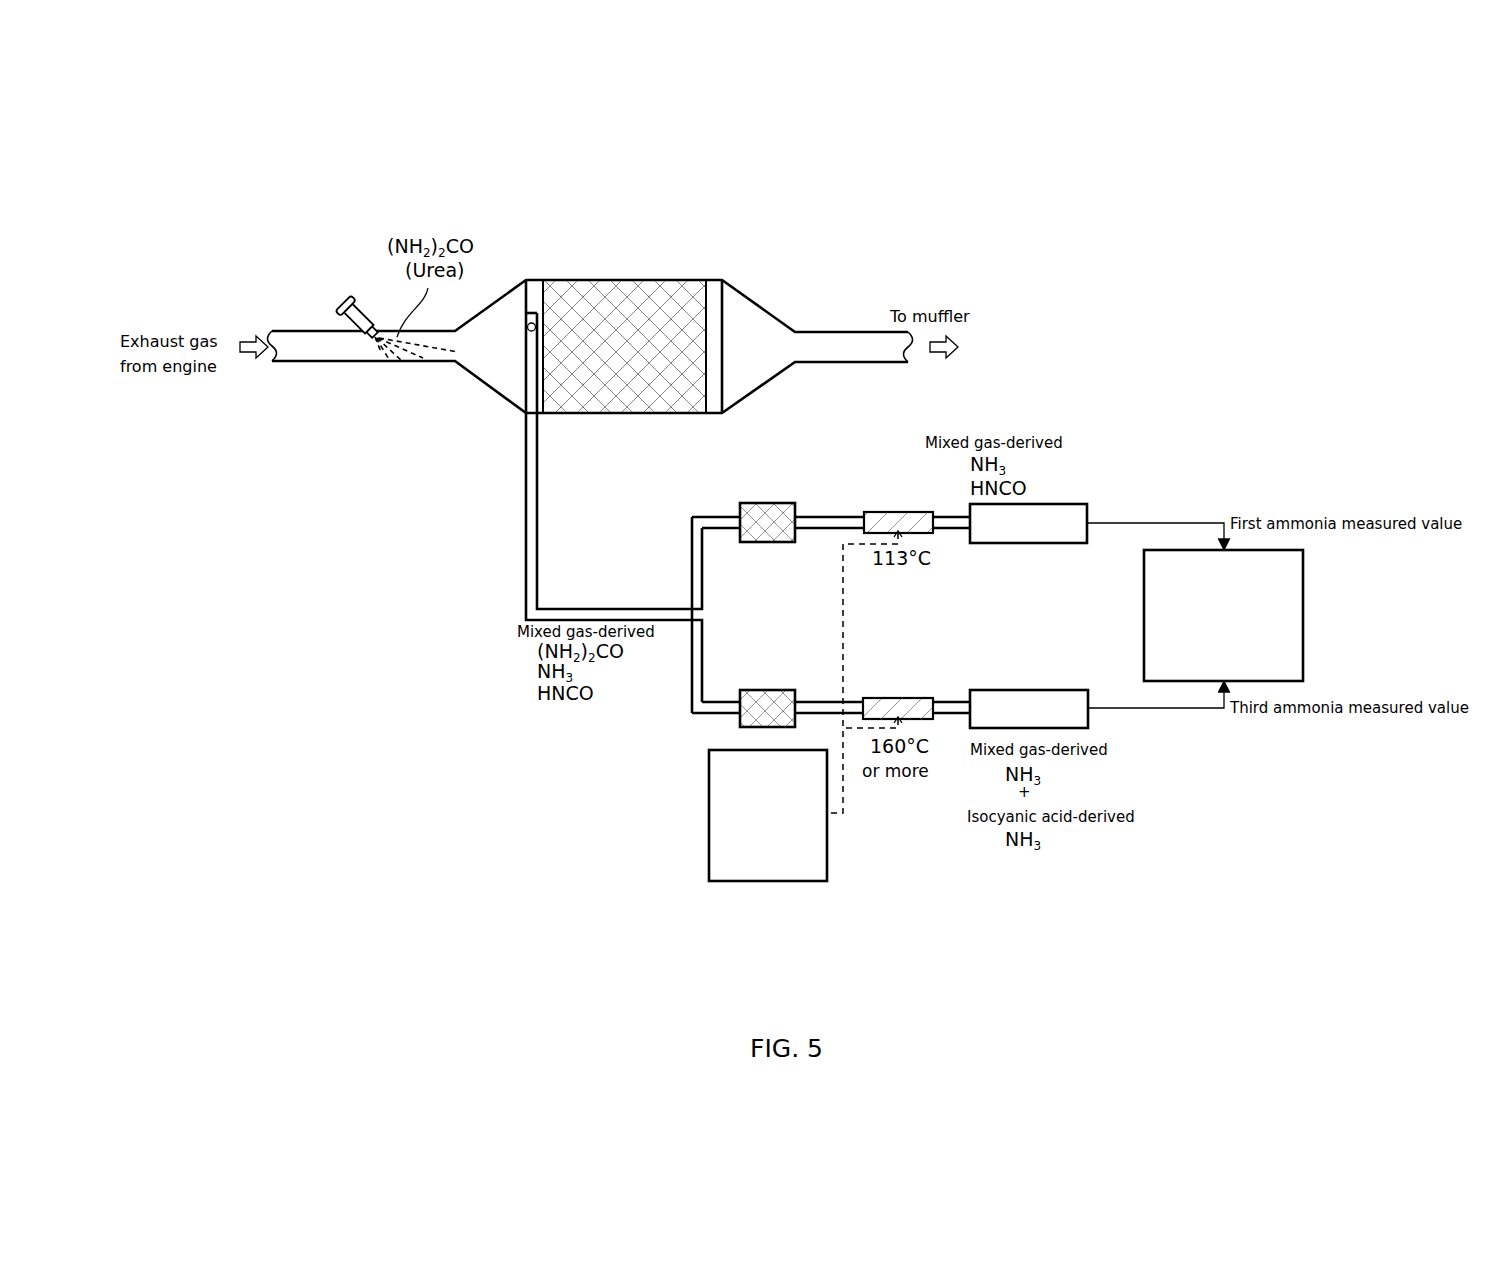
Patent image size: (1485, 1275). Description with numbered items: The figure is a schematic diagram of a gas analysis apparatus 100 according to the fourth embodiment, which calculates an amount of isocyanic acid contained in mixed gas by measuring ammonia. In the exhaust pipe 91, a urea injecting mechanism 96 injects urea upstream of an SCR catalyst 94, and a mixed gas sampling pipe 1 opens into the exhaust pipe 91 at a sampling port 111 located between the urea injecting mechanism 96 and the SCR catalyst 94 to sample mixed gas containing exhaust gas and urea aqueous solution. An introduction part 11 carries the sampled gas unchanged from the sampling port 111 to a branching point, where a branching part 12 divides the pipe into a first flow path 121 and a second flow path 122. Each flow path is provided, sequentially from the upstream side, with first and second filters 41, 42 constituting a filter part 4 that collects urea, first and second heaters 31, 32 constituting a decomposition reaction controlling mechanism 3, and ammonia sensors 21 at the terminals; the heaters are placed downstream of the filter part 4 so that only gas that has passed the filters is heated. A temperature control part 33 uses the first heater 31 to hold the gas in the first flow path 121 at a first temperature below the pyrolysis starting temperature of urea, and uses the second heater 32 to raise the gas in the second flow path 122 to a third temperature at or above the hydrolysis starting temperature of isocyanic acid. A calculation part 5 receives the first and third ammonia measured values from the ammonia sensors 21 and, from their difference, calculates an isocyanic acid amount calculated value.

The gas analysis apparatus 100 is at (1010, 378).
The mixed gas sampling pipe 1 is at (498, 620).
The decomposition reaction controlling mechanism 3 is at (718, 897).
The filter part 4 is at (772, 615).
The calculation part 5 is at (1303, 614).
The introduction part 11 is at (517, 533).
The branching part 12 is at (808, 485).
The ammonia sensor 21 is at (1048, 503).
The first heater 31 is at (900, 510).
The second heater 32 is at (900, 697).
The temperature control part 33 is at (766, 882).
The first filter 41 is at (777, 544).
The second filter 42 is at (778, 688).
The exhaust pipe 91 is at (487, 395).
The SCR catalyst 94 is at (625, 280).
The urea injecting mechanism 96 is at (350, 293).
The sampling port 111 is at (528, 323).
The first flow path 121 is at (840, 505).
The second flow path 122 is at (850, 685).